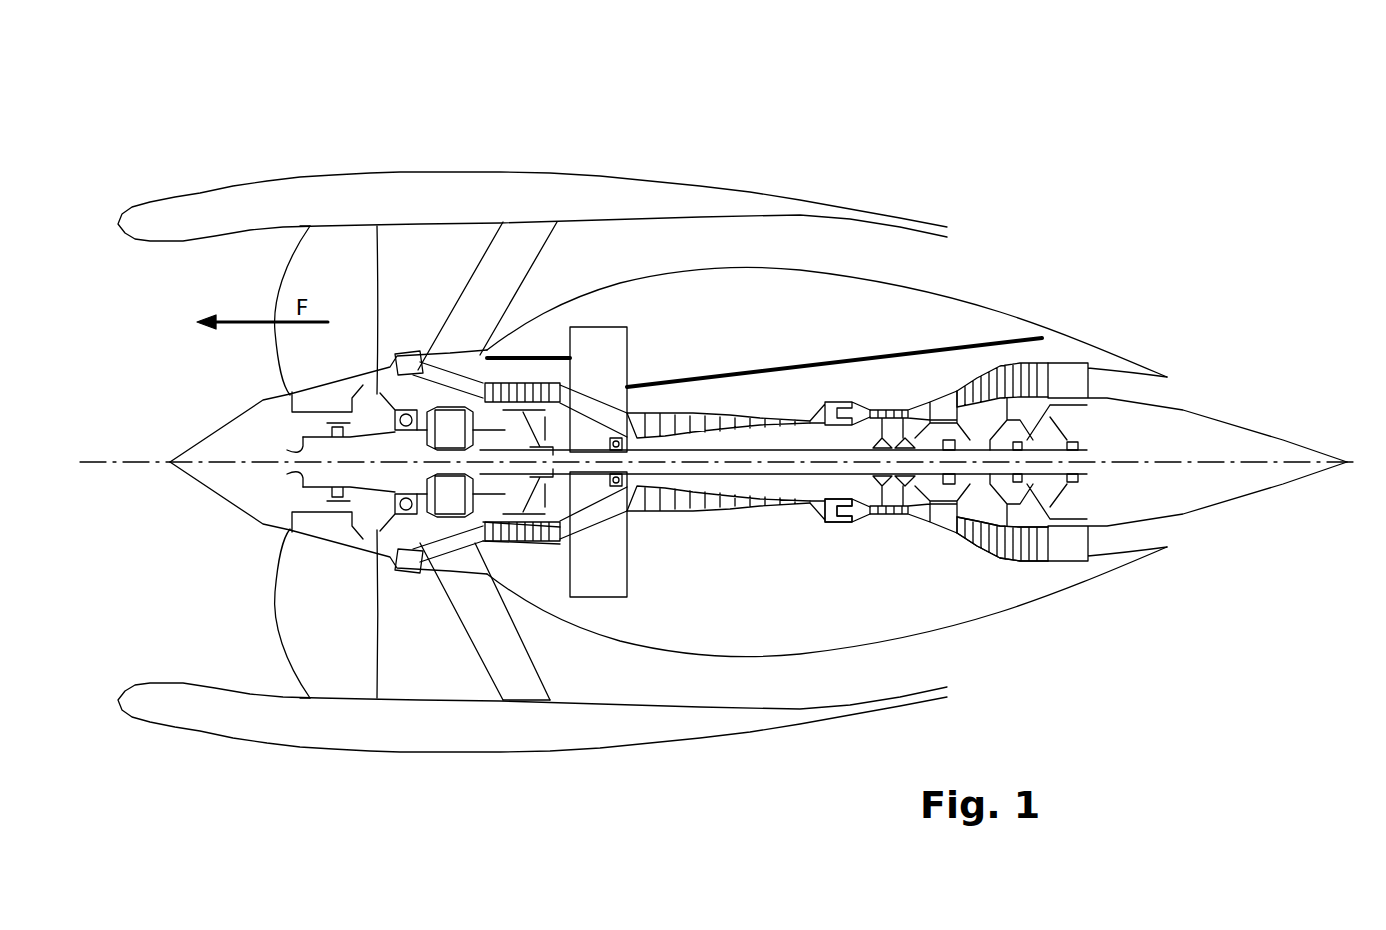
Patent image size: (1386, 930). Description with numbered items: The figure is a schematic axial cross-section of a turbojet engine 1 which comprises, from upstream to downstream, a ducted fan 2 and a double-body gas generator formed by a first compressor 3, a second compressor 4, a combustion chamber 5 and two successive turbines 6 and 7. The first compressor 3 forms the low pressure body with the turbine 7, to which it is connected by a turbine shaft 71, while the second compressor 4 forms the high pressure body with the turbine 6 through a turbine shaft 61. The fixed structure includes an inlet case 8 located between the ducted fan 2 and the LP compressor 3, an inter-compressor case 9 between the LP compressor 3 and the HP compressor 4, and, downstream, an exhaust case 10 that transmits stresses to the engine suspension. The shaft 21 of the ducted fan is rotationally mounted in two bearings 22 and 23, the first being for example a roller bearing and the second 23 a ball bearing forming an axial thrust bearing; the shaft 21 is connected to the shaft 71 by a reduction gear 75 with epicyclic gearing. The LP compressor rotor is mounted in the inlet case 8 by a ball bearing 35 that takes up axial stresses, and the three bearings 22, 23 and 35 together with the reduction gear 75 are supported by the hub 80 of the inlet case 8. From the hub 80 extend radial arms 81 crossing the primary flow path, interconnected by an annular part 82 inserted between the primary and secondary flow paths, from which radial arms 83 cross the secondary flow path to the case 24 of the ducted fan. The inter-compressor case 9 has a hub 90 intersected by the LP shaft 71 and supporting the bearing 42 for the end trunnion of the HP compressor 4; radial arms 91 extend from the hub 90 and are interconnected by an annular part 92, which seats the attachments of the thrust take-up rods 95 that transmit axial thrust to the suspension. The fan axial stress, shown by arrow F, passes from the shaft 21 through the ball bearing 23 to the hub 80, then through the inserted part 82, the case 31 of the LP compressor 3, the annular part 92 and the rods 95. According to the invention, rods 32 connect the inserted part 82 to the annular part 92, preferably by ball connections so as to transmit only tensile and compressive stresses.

The turbojet engine 1 is at (1150, 588).
The ducted fan 2 is at (332, 243).
The first compressor 3 is at (543, 352).
The second compressor 4 is at (713, 413).
The combustion chamber 5 is at (850, 410).
The turbine 6 is at (893, 407).
The turbine 7 is at (1015, 363).
The inlet case 8 is at (450, 297).
The inter-compressor case 9 is at (609, 307).
The exhaust case 10 is at (1067, 380).
The shaft of the ducted fan 21 is at (290, 452).
The bearing 22 is at (340, 490).
The bearing 23 is at (400, 503).
The case of the ducted fan 24 is at (267, 203).
The case of the LP compressor 31 is at (627, 353).
The rods 32 is at (513, 390).
The ball bearing 35 is at (490, 497).
The bearing 42 is at (613, 483).
The turbine shaft 61 is at (853, 520).
The turbine shaft 71 is at (972, 517).
The reduction gear 75 is at (450, 560).
The hub of the inlet case 80 is at (330, 386).
The radial arms 81 is at (375, 365).
The annular part 82 is at (462, 347).
The radial arms 83 is at (490, 307).
The hub 90 is at (650, 403).
The radial arms 91 is at (585, 402).
The annular part 92 is at (595, 327).
The thrust take-up rods 95 is at (832, 362).